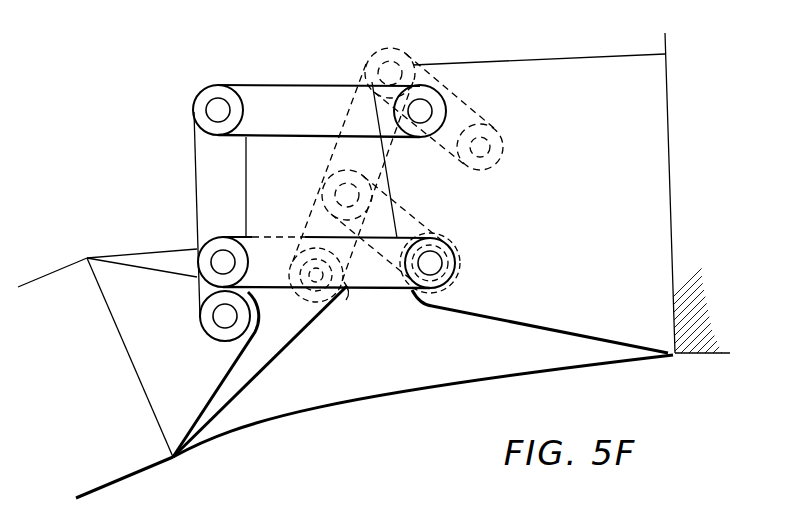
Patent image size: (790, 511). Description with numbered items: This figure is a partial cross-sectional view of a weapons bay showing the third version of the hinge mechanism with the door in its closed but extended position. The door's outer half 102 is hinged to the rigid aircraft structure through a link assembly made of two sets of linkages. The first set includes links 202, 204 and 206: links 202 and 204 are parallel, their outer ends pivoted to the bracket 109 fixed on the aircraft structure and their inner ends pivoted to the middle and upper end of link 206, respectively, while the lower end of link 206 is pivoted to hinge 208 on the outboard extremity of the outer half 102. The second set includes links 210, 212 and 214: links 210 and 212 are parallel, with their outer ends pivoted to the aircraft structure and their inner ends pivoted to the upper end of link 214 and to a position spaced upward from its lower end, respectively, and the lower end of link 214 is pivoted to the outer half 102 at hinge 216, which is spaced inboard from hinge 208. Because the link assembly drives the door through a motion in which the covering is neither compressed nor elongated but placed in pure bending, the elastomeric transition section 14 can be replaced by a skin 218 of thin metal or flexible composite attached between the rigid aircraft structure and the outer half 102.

The elastomeric transition section 14 is at (374, 392).
The skin 218 is at (452, 383).
The outer half 102 is at (118, 247).
The bracket 109 is at (582, 231).
The link 202 is at (417, 214).
The link 204 is at (473, 122).
The link 206 is at (315, 225).
The hinge 208 is at (324, 300).
The link 210 is at (288, 289).
The link 212 is at (282, 84).
The link 214 is at (193, 157).
The hinge 216 is at (225, 317).